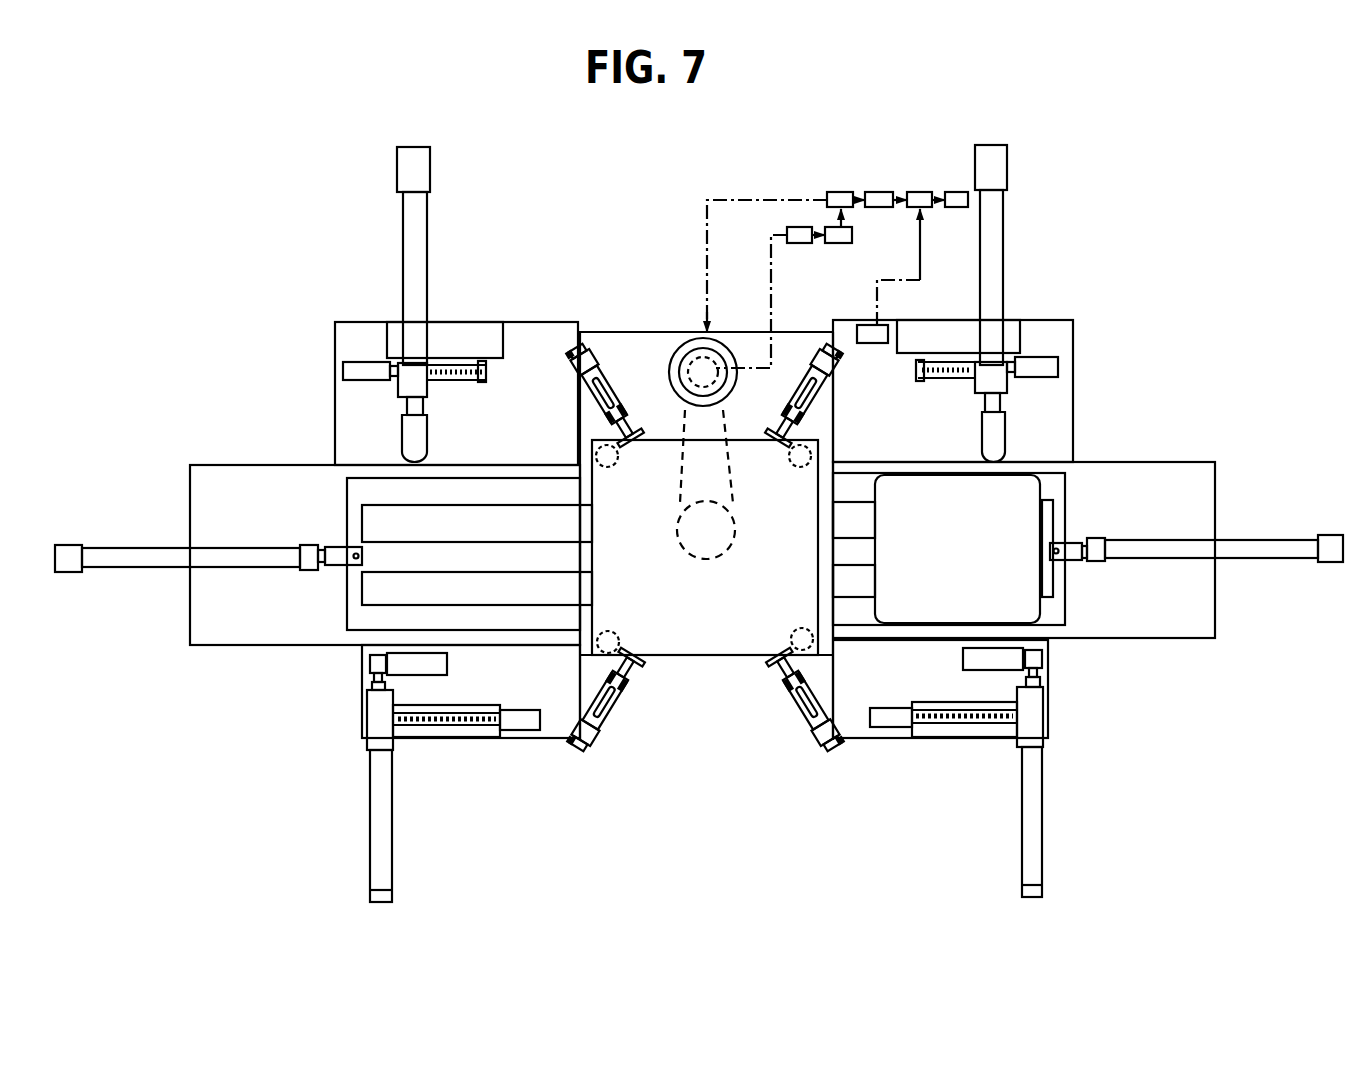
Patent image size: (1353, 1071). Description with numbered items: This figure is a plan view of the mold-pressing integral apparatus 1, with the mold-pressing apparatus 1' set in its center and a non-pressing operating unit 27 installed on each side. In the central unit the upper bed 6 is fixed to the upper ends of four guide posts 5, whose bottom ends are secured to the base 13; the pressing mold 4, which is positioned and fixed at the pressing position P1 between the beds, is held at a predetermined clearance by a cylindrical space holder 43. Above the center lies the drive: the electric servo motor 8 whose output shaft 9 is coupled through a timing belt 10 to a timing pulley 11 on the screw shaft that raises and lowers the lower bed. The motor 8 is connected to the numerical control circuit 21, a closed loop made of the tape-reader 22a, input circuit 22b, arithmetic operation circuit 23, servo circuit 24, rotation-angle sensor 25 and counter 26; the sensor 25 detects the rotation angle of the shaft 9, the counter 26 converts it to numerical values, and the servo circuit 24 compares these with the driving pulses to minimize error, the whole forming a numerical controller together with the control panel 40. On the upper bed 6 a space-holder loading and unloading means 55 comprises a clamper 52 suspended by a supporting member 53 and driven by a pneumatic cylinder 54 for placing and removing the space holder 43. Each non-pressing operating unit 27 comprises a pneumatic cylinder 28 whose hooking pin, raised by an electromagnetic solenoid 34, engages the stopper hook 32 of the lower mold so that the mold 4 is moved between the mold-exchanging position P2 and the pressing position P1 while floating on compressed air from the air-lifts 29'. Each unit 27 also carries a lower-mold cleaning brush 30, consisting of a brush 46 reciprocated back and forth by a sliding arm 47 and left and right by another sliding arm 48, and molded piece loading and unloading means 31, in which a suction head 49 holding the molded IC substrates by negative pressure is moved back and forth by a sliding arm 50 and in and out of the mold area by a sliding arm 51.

The mold-pressing apparatus 1 is at (898, 98).
The mold-pressing apparatus 1' is at (628, 252).
The pressing mold 4 is at (1042, 479).
The guide posts 5 is at (618, 464).
The upper bed 6 is at (818, 449).
The electric servo motor 8 is at (672, 354).
The output shaft 9 is at (684, 374).
The timing belt 10 is at (735, 470).
The timing pulley 11 is at (706, 484).
The base 13 is at (595, 670).
The numerical control circuit 21 is at (871, 218).
The tape-reader 22a is at (952, 192).
The input circuit 22b is at (918, 192).
The arithmetic operation circuit 23 is at (878, 192).
The servo circuit 24 is at (835, 192).
The rotation-angle sensor 25 is at (800, 243).
The counter 26 is at (840, 243).
The non-pressing operating unit 27 is at (237, 362).
The pneumatic cylinder 28 is at (130, 548).
The air-lifts 29' is at (618, 540).
The lower-mold cleaning brush 30 is at (447, 308).
The molded piece loading and unloading means 31 is at (345, 722).
The stopper hook 32 is at (1053, 574).
The electromagnetic solenoid 34 is at (349, 547).
The control panel 40 is at (868, 325).
The space holder 43 is at (620, 405).
The brush 46 is at (429, 446).
The sliding arm 47 is at (428, 384).
The sliding arm 48 is at (480, 322).
The suction head 49 is at (370, 664).
The sliding arm 50 is at (386, 742).
The sliding arm 51 is at (451, 737).
The clamper 52 is at (600, 735).
The supporting member 53 is at (640, 664).
The pneumatic cylinder 54 is at (612, 710).
The space-holder loading and unloading means 55 is at (582, 384).
The pressing position P1 is at (710, 657).
The mold-exchanging position P2 is at (477, 633).